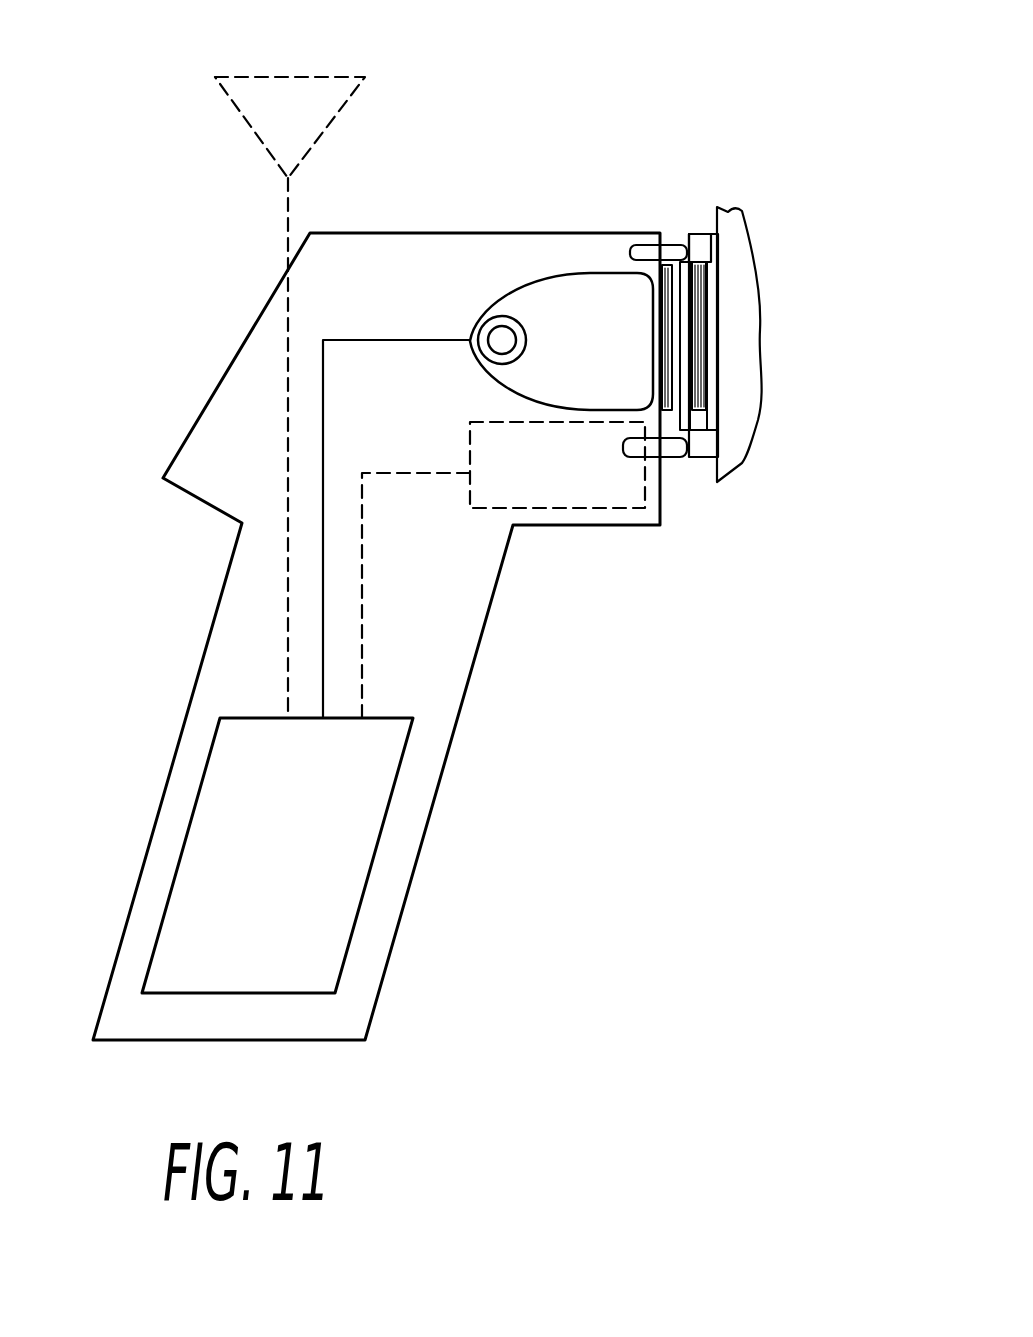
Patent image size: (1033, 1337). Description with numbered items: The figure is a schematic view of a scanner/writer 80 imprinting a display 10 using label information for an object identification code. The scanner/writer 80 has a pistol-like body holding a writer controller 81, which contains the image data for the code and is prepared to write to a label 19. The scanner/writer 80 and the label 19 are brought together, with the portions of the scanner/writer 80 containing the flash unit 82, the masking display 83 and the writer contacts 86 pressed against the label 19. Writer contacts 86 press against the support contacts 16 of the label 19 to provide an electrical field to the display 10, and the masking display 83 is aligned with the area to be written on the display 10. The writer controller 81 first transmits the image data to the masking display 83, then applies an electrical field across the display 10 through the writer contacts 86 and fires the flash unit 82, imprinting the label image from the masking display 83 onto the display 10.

The scanner/writer 80 is at (182, 365).
The writer controller 81 is at (172, 882).
The flash unit 82 is at (523, 280).
The masking display 83 is at (662, 337).
The writer contacts 86 is at (672, 247).
The display 10 is at (717, 328).
The support contacts 16 is at (697, 233).
The label 19 is at (750, 462).